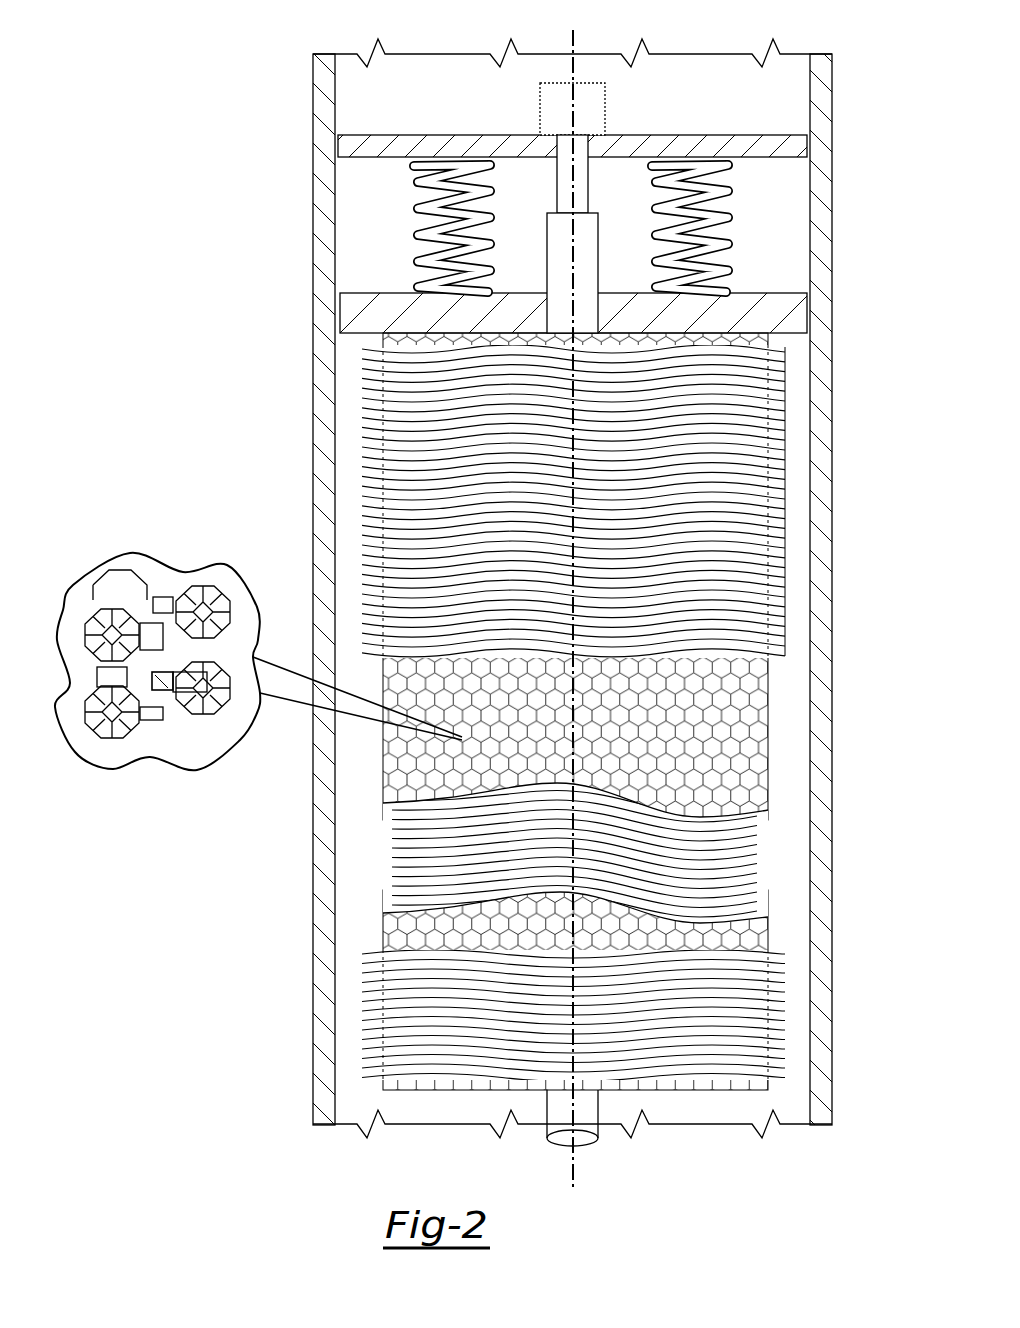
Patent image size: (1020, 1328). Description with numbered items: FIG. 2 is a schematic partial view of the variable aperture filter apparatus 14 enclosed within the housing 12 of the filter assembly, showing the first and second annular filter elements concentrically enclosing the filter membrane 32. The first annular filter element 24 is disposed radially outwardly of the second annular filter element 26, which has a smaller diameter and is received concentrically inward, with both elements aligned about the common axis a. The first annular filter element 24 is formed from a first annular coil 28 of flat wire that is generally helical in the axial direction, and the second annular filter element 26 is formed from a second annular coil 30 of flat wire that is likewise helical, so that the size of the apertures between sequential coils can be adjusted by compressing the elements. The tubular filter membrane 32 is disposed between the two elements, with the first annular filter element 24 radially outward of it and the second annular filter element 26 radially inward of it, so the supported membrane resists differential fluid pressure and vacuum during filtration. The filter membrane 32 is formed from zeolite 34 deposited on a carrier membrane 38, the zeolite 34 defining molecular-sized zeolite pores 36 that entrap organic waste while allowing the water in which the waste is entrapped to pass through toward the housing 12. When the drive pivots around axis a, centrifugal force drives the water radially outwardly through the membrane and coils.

The housing 12 is at (313, 367).
The variable aperture filter apparatus 14 is at (277, 287).
The first annular filter element 24 is at (783, 428).
The second annular filter element 26 is at (757, 878).
The first annular coil 28 is at (785, 615).
The second annular coil 30 is at (781, 1012).
The filter membrane 32 is at (752, 780).
The zeolite 34 is at (178, 560).
The zeolite pores 36 is at (160, 676).
The carrier membrane 38 is at (392, 933).
The axis a is at (573, 46).